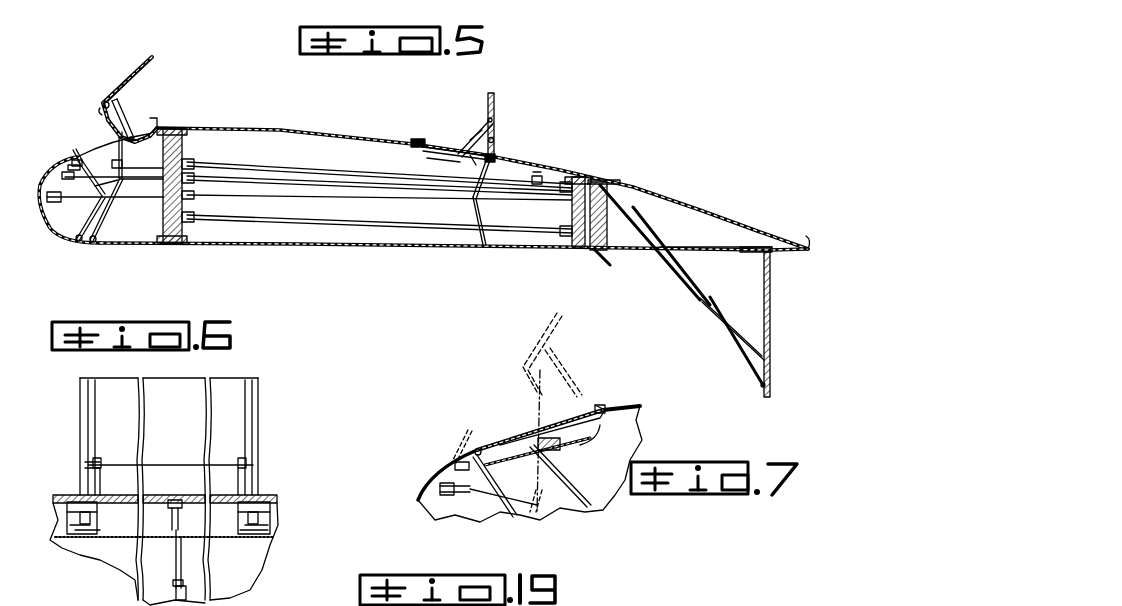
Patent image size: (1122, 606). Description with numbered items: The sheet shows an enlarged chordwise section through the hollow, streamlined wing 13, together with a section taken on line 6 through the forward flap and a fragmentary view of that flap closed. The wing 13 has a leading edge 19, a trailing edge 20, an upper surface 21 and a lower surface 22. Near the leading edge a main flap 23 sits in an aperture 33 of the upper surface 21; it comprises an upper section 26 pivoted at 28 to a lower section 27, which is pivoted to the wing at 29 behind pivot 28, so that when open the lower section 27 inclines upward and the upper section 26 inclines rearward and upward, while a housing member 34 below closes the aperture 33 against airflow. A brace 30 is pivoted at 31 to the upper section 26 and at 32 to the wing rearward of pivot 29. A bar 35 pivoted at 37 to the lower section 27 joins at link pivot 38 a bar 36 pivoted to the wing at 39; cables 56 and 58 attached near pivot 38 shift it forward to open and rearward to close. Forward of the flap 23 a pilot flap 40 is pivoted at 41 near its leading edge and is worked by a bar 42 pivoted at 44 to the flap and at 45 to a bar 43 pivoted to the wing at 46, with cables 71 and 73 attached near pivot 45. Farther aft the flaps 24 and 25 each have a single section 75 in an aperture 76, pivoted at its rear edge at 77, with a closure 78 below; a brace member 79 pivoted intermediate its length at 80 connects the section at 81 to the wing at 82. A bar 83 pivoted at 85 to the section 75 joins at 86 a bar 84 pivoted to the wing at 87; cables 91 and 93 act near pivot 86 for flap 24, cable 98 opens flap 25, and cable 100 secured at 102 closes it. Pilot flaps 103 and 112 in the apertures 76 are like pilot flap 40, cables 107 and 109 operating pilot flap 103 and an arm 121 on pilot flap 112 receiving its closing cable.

In FIG. 5, the section line 6- 6 is at (152, 272).
In FIG. 5, the wing 13 is at (263, 128).
In FIG. 6, the wing 13 is at (56, 494).
In FIG. 7, the wing 13 is at (638, 407).
In FIG. 5, the leading edge 19 is at (47, 230).
In FIG. 5, the trailing edge 20 is at (737, 235).
In FIG. 5, the upper surface 21 is at (322, 134).
In FIG. 5, the lower surface 22 is at (305, 252).
In FIG. 5, the flap 23 is at (124, 68).
In FIG. 6, the flap 23 is at (262, 392).
In FIG. 7, the flap 23 is at (583, 406).
In FIG. 5, the flap 24 is at (496, 96).
In FIG. 5, the flap 25 is at (771, 378).
In FIG. 5, the upper section 26 is at (146, 58).
In FIG. 6, the upper section 26 is at (172, 390).
In FIG. 7, the upper section 26 is at (562, 422).
In FIG. 5, the lower section 27 is at (90, 108).
In FIG. 6, the lower section 27 is at (230, 483).
In FIG. 7, the lower section 27 is at (517, 462).
In FIG. 5, the pivot 28 is at (104, 102).
In FIG. 6, the pivot 28 is at (98, 457).
In FIG. 7, the pivot 28 is at (482, 448).
In FIG. 5, the pivot 29 is at (133, 129).
In FIG. 6, the pivot 29 is at (92, 537).
In FIG. 7, the pivot 29 is at (565, 445).
In FIG. 5, the brace 30 is at (124, 105).
In FIG. 6, the brace 30 is at (85, 458).
In FIG. 5, the pivot 31 is at (124, 84).
In FIG. 6, the pivot 31 is at (87, 440).
In FIG. 7, the pivot 31 is at (515, 436).
In FIG. 5, the pivot 32 is at (168, 120).
In FIG. 6, the pivot 32 is at (66, 520).
In FIG. 7, the pivot 32 is at (605, 406).
In FIG. 5, the aperture 33 is at (100, 146).
In FIG. 5, the housing member 34 is at (146, 144).
In FIG. 7, the housing member 34 is at (594, 443).
In FIG. 5, the bar 35 is at (124, 168).
In FIG. 6, the bar 35 is at (176, 556).
In FIG. 7, the bar 35 is at (578, 487).
In FIG. 5, the bar 36 is at (103, 228).
In FIG. 6, the bar 36 is at (176, 594).
In FIG. 5, the pivot 37 is at (118, 133).
In FIG. 6, the pivot 37 is at (173, 500).
In FIG. 5, the link pivot 38 is at (110, 167).
In FIG. 6, the link pivot 38 is at (173, 578).
In FIG. 5, the pivot 39 is at (92, 244).
In FIG. 5, the pilot flap 40 is at (77, 148).
In FIG. 7, the pilot flap 40 is at (474, 436).
In FIG. 5, the pivot 41 is at (68, 165).
In FIG. 7, the pivot 41 is at (456, 462).
In FIG. 5, the bar 42 is at (90, 184).
In FIG. 7, the bar 42 is at (505, 505).
In FIG. 5, the bar 43 is at (82, 218).
In FIG. 5, the pivot 44 is at (72, 158).
In FIG. 7, the pivot 44 is at (474, 490).
In FIG. 5, the pivot 45 is at (104, 198).
In FIG. 5, the pivot 46 is at (75, 243).
In FIG. 5, the cable 56 is at (80, 179).
In FIG. 7, the cable 56 is at (545, 515).
In FIG. 5, the cable 58 is at (183, 158).
In FIG. 5, the cable 71 is at (56, 200).
In FIG. 5, the cable 73 is at (140, 185).
In FIG. 5, the flap section 75 is at (495, 108).
In FIG. 5, the aperture 76 is at (443, 147).
In FIG. 5, the pivot 77 is at (497, 156).
In FIG. 5, the closure 78 is at (768, 227).
In FIG. 5, the brace member 79 is at (480, 128).
In FIG. 5, the pivot 80 is at (472, 143).
In FIG. 5, the pivot 81 is at (488, 116).
In FIG. 5, the pivot 82 is at (458, 165).
In FIG. 5, the bar 83 is at (490, 177).
In FIG. 5, the bar 84 is at (480, 230).
In FIG. 5, the pivot 85 is at (495, 133).
In FIG. 5, the pivot 86 is at (474, 200).
In FIG. 5, the pivot 87 is at (484, 249).
In FIG. 5, the cable 91 is at (518, 200).
In FIG. 5, the cable 93 is at (286, 185).
In FIG. 5, the cable 98 is at (312, 181).
In FIG. 5, the cable 100 is at (740, 352).
In FIG. 5, the attachment point 102 is at (762, 388).
In FIG. 5, the pilot flap 103 is at (420, 138).
In FIG. 5, the cable 107 is at (316, 175).
In FIG. 5, the cable 109 is at (535, 175).
In FIG. 5, the pilot flap 112 is at (602, 262).
In FIG. 5, the arm 121 is at (606, 243).